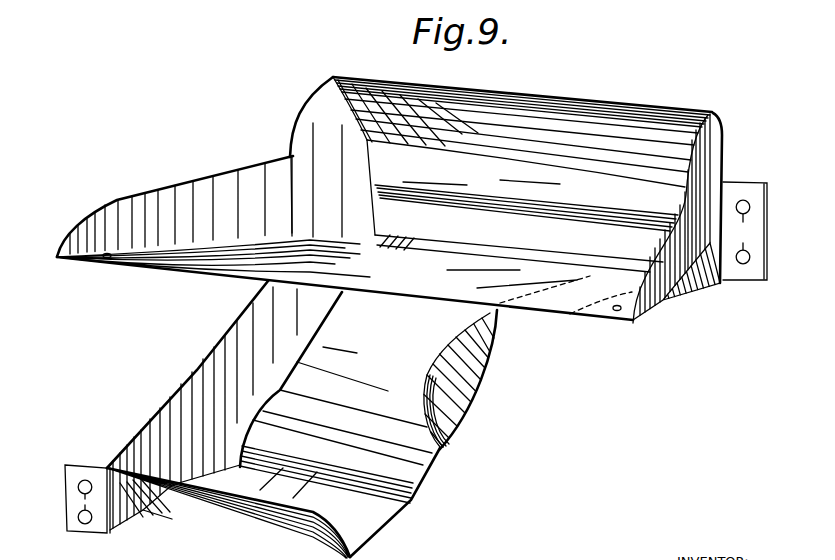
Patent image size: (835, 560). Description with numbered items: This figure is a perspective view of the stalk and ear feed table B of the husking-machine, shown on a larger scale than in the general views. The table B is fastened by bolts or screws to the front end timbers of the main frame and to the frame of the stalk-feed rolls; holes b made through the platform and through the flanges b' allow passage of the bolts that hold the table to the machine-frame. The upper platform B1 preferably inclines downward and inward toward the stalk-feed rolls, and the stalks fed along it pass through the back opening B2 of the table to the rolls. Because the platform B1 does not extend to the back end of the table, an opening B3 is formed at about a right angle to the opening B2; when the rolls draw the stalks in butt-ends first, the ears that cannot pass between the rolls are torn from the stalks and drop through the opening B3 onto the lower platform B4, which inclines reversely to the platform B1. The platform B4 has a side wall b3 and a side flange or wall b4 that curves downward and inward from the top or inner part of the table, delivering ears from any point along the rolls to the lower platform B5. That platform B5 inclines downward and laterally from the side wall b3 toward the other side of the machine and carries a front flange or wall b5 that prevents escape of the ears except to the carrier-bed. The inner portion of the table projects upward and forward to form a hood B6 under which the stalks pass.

The stalk and ear feed table B is at (231, 127).
The platform B1 is at (370, 277).
The back opening B2 is at (512, 237).
The opening B3 is at (363, 237).
The lower platform B4 is at (355, 382).
The lower platform B5 is at (312, 512).
The hood B6 is at (592, 151).
The holes b is at (421, 365).
The flanges b' is at (411, 357).
The side wall b3 is at (202, 405).
The side flange or wall b4 is at (460, 379).
The front flange or wall b5 is at (244, 521).